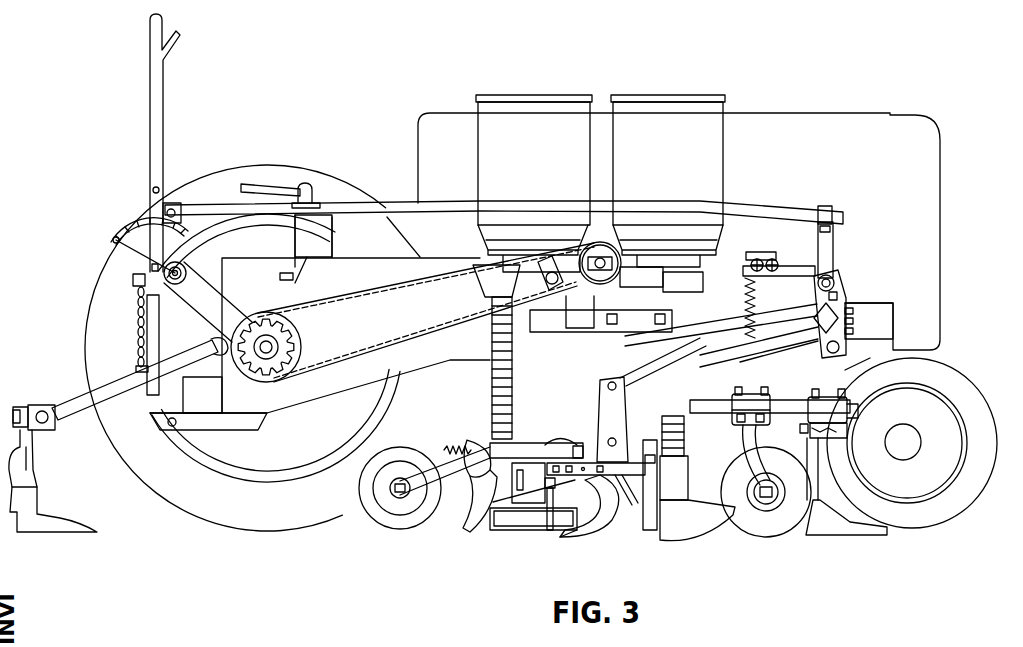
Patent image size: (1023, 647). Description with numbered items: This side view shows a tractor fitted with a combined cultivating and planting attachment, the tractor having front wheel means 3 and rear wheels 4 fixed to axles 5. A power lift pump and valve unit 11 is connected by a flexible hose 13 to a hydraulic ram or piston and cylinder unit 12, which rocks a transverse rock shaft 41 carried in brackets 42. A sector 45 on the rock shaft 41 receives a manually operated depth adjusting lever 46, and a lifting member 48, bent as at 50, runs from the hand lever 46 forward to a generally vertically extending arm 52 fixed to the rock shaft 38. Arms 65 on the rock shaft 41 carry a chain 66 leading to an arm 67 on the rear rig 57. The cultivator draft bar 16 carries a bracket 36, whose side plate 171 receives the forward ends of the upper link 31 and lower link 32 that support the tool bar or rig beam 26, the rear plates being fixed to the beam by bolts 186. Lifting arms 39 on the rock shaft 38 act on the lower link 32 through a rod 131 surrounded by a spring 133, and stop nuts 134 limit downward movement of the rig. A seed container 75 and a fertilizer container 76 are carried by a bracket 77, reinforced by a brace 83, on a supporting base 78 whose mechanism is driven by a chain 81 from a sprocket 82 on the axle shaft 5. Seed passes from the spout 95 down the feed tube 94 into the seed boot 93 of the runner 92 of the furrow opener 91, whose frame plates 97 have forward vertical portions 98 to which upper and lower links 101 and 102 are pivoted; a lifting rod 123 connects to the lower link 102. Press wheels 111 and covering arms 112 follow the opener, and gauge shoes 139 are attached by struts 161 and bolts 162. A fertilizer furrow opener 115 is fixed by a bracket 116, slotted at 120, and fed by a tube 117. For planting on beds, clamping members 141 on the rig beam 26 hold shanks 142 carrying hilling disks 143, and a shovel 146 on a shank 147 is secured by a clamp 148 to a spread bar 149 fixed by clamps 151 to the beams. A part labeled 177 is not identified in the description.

The front wheel means 3 is at (972, 395).
The rear wheels 4 is at (283, 174).
The axle shaft 5 is at (279, 347).
The power lift pump and valve unit 11 is at (327, 233).
The hydraulic ram or piston and cylinder unit 12 is at (150, 397).
The flexible hose 13 is at (208, 394).
The draft bar 16 is at (840, 300).
The tool bar 26 is at (788, 402).
The upper link 31 is at (770, 318).
The lower link 32 is at (765, 400).
The bracket 36 is at (855, 319).
The rock shaft 38 is at (835, 280).
The lifting arm 39 is at (790, 268).
The rock shaft 41 is at (187, 271).
The brackets 42 is at (205, 292).
The sector 45 is at (130, 238).
The depth adjusting lever 46 is at (155, 112).
The lifting member 48 is at (388, 201).
The bend 50 is at (577, 201).
The vertically extending arm 52 is at (836, 240).
The rear rig 57 is at (68, 412).
The arms 65 is at (136, 288).
The chain 66 is at (143, 352).
The arm 67 is at (181, 345).
The seed container 75 is at (514, 86).
The fertilizer container 76 is at (672, 86).
The bracket 77 is at (580, 327).
The supporting base 78 is at (536, 250).
The chain 81 is at (355, 303).
The sprocket 82 is at (267, 314).
The brace 83 is at (632, 292).
The furrow opener 91 is at (616, 544).
The runner 92 is at (592, 520).
The seed boot 93 is at (500, 480).
The feed tube 94 is at (492, 404).
The funnel or spout 95 is at (478, 276).
The plates 97 is at (576, 442).
The forward vertical portions 98 is at (600, 392).
The upper link 101 is at (620, 377).
The lower link 102 is at (668, 365).
The press wheels 111 is at (360, 490).
The covering arms 112 is at (466, 530).
The fertilizer furrow opener 115 is at (690, 536).
The bracket 116 is at (628, 506).
The tube 117 is at (698, 288).
The slot 120 is at (650, 525).
The lifting rod 123 is at (771, 259).
The rod 131 is at (752, 260).
The spring 133 is at (742, 280).
The stop nuts 134 is at (760, 257).
The gauge shoes 139 is at (553, 531).
The clamping members 141 is at (750, 398).
The standard or shank 142 is at (752, 440).
The hilling disk 143 is at (768, 538).
The shovel 146 is at (845, 536).
The shank or support 147 is at (819, 455).
The clamp 148 is at (838, 440).
The spread bar 149 is at (848, 432).
The clamps 151 is at (858, 416).
The struts 161 is at (544, 508).
The attaching bolts 162 is at (558, 490).
The side plate 171 is at (862, 352).
The pin 177 is at (826, 352).
The bolts 186 is at (692, 468).